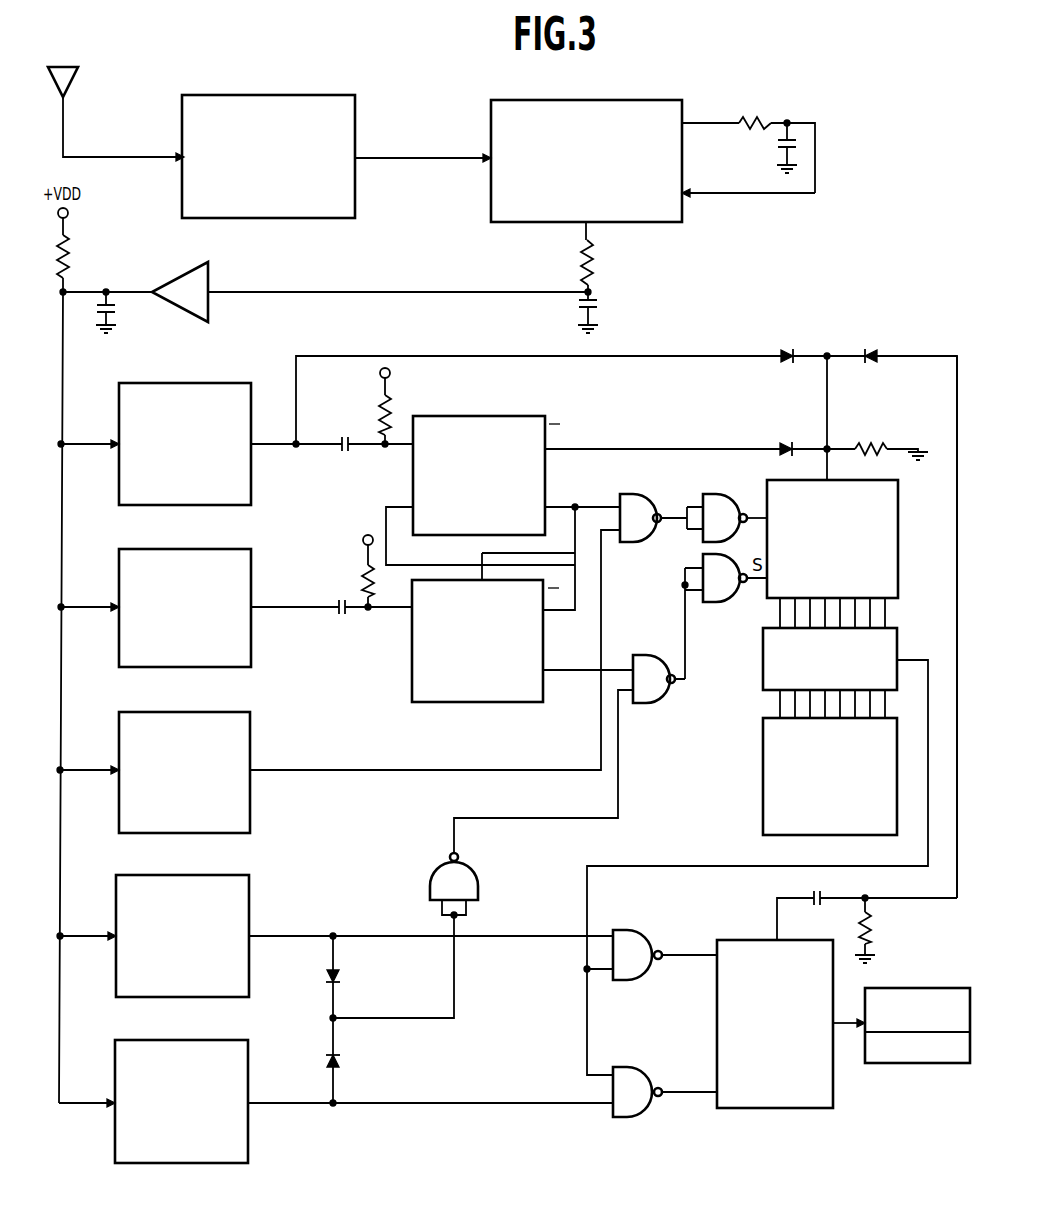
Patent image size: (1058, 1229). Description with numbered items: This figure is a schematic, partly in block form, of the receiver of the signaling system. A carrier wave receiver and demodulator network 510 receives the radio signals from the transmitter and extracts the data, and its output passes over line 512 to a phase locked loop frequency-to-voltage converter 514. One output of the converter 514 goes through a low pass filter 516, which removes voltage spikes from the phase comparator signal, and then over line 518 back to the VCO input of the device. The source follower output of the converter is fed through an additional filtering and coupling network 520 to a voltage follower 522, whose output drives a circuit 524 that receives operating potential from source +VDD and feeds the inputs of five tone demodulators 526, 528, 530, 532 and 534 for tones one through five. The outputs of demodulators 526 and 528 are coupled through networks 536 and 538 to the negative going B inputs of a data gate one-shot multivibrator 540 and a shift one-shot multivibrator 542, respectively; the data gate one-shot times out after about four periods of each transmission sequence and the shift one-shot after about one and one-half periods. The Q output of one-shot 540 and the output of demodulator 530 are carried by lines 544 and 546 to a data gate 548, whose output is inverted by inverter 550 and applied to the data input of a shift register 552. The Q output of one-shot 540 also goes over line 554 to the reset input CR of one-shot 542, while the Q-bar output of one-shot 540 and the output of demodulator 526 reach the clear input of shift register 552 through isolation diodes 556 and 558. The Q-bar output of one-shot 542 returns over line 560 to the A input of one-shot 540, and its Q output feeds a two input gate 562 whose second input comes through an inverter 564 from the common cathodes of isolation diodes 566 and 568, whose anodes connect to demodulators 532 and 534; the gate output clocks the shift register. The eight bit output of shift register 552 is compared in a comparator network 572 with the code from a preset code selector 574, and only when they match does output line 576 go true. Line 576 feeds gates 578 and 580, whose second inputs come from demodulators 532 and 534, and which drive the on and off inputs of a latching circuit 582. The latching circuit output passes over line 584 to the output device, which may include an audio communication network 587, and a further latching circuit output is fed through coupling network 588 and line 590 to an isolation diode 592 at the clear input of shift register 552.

The carrier wave receiver and demodulator network 510 is at (286, 95).
The line 512 is at (388, 158).
The phase locked loop frequency-to-voltage converter 514 is at (640, 100).
The low pass filter 516 is at (798, 104).
The line 518 is at (740, 194).
The filtering and coupling network 520 is at (594, 289).
The voltage follower 522 is at (212, 262).
The circuit 524 is at (74, 278).
The tone demodulator 526 is at (198, 383).
The tone demodulator 528 is at (204, 549).
The tone demodulator 530 is at (208, 712).
The tone demodulator 532 is at (218, 875).
The tone demodulator 534 is at (216, 1040).
The network 536 is at (368, 424).
The network 538 is at (350, 597).
The data gate one-shot multivibrator 540 is at (486, 416).
The shift one-shot multivibrator 542 is at (412, 658).
The line 544 is at (577, 504).
The line 546 is at (438, 768).
The data gate 548 is at (624, 494).
The inverter 550 is at (706, 494).
The shift register 552 is at (898, 546).
The line 554 is at (578, 534).
The isolation diode 556 is at (784, 445).
The isolation diode 558 is at (788, 364).
The line 560 is at (408, 565).
The two input gate 562 is at (656, 703).
The inverter 564 is at (430, 882).
The isolation diode 566 is at (340, 975).
The isolation diode 568 is at (340, 1060).
The comparator network 572 is at (763, 660).
The preset code selector 574 is at (763, 785).
The output line 576 is at (912, 656).
The gate 578 is at (628, 930).
The gate 580 is at (644, 1067).
The latching circuit 582 is at (776, 1108).
The line 584 is at (838, 1030).
The audio communication network 587 is at (920, 1063).
The coupling network 588 is at (882, 912).
The line 590 is at (957, 392).
The isolation diode 592 is at (872, 363).